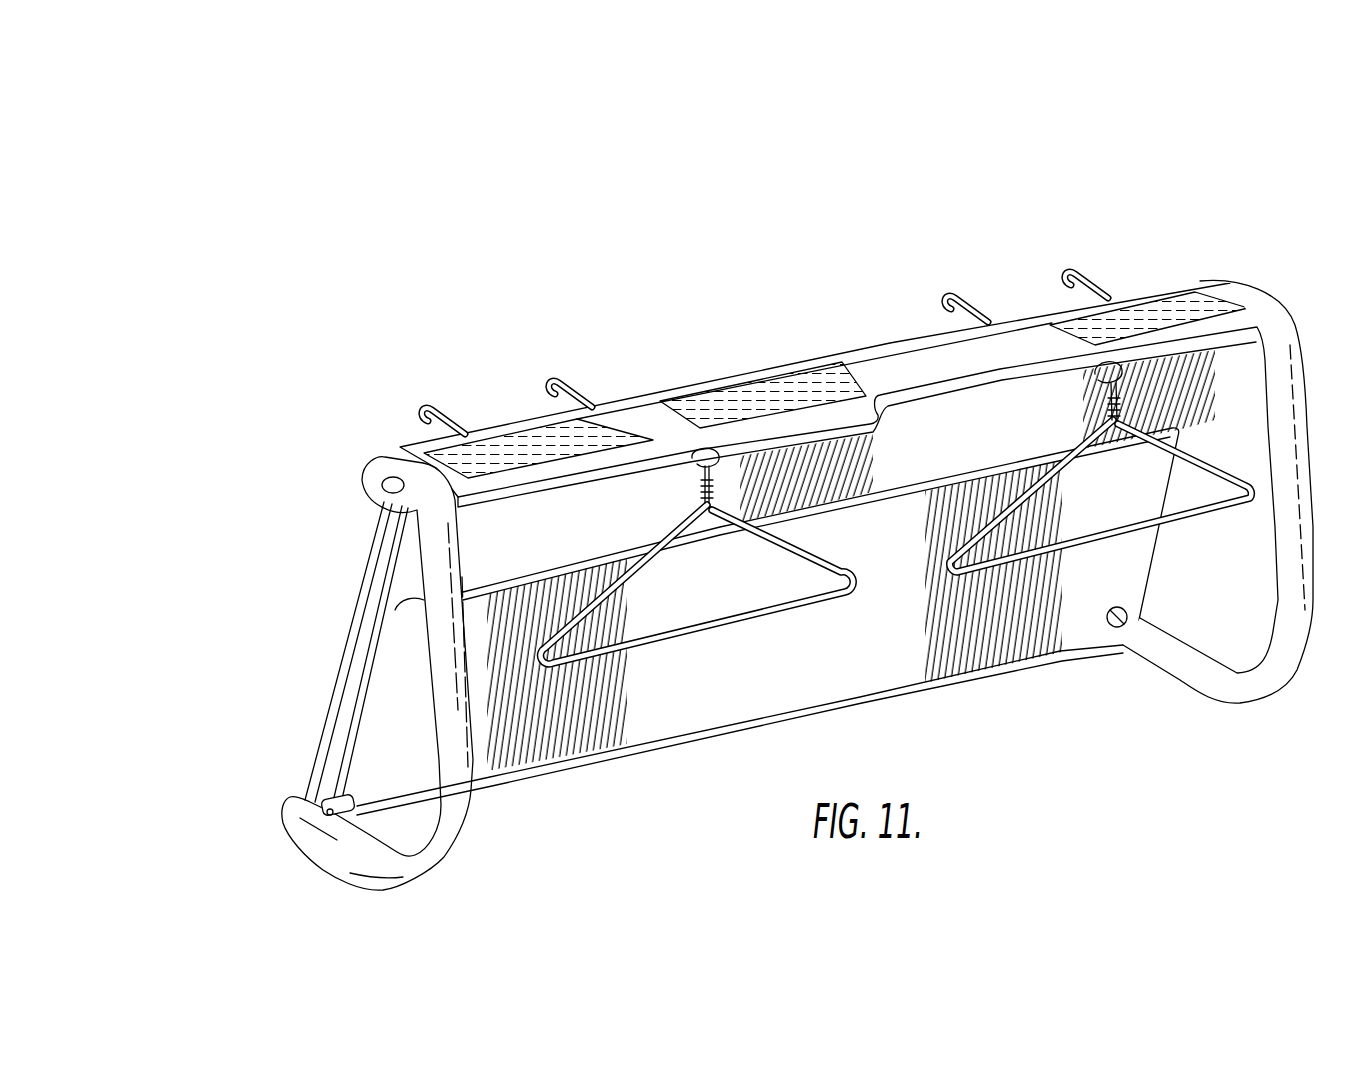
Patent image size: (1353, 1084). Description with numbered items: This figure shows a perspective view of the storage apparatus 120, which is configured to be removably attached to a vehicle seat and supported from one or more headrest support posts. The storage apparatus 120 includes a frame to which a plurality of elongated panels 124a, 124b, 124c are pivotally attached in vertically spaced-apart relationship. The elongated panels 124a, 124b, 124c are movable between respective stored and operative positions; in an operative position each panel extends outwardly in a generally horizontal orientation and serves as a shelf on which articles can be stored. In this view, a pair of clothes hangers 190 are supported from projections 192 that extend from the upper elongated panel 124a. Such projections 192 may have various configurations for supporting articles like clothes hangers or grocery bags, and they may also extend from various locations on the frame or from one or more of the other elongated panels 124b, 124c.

The storage apparatus 120 is at (1200, 224).
The upper elongated panel 124a is at (648, 418).
The elongated panel 124b is at (413, 570).
The elongated panel 124c is at (342, 736).
The clothes hangers 190 is at (710, 632).
The projections 192 is at (1118, 372).